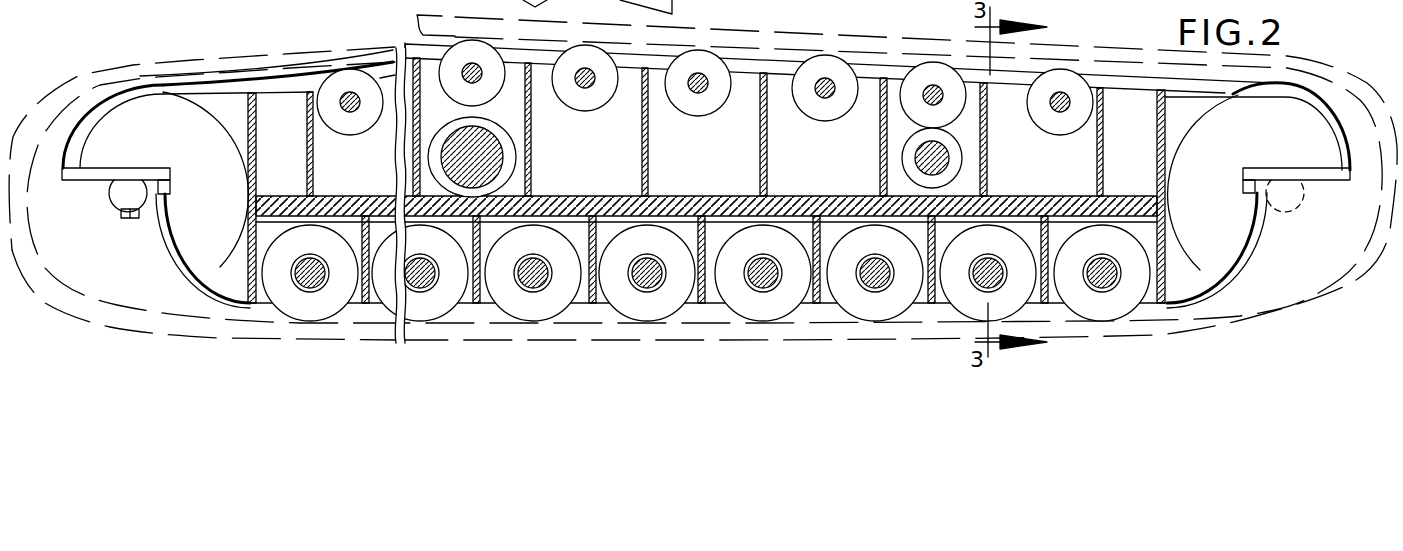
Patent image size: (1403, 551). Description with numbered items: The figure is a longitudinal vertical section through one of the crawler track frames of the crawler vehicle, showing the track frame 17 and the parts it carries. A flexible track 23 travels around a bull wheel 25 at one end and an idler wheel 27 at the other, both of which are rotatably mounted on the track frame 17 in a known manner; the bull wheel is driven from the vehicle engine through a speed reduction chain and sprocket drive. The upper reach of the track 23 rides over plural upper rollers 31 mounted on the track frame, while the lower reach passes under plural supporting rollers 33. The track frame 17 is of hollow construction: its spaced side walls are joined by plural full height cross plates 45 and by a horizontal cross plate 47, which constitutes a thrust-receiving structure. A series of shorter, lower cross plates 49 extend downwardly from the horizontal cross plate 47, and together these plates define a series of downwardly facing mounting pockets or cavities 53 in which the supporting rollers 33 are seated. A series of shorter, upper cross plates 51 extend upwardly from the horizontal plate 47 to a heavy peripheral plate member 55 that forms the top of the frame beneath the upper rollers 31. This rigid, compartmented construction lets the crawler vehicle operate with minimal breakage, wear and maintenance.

The track frame 17 is at (1310, 307).
The flexible track 23 is at (750, 58).
The bull wheel 25 is at (206, 306).
The idler wheel 27 is at (1222, 306).
The upper rollers 31 is at (837, 63).
The supporting rollers 33 is at (315, 312).
The full height cross plates 45 is at (1165, 150).
The horizontal cross plate 47 is at (620, 197).
The lower cross plates 49 is at (362, 240).
The upper cross plates 51 is at (648, 127).
The mounting pockets 53 is at (742, 228).
The peripheral plate member 55 is at (875, 71).